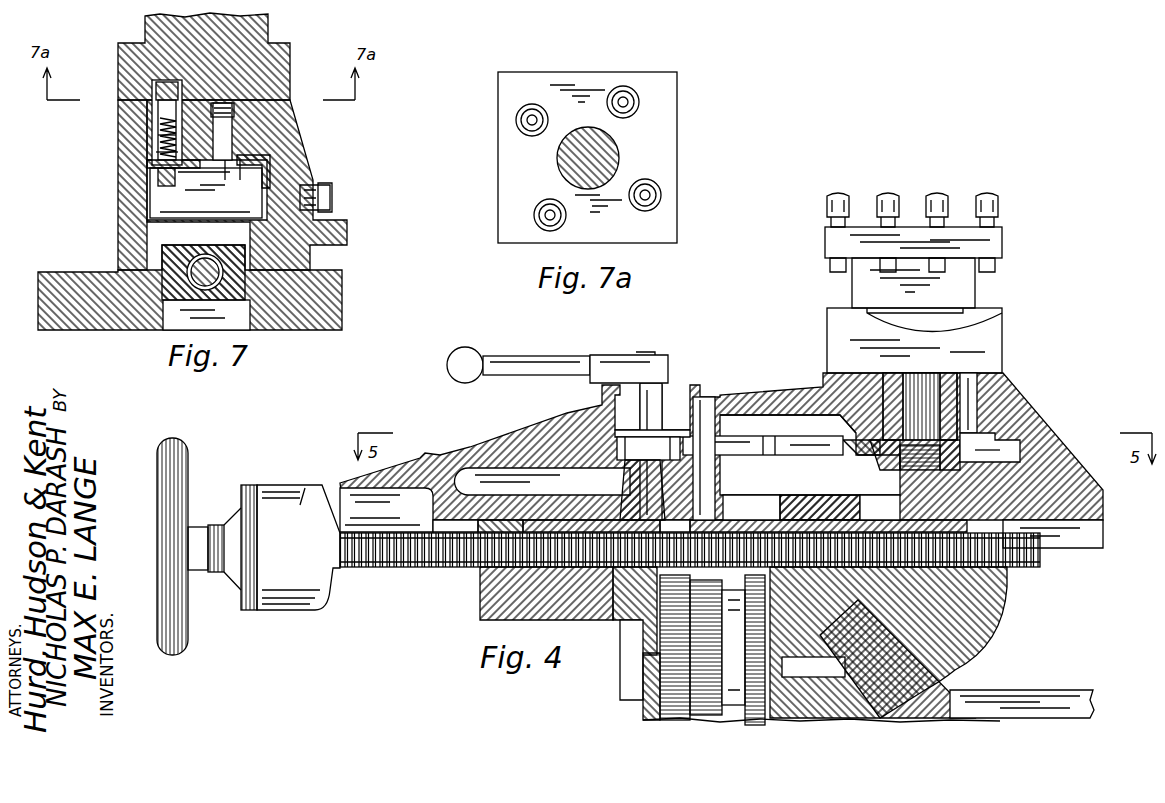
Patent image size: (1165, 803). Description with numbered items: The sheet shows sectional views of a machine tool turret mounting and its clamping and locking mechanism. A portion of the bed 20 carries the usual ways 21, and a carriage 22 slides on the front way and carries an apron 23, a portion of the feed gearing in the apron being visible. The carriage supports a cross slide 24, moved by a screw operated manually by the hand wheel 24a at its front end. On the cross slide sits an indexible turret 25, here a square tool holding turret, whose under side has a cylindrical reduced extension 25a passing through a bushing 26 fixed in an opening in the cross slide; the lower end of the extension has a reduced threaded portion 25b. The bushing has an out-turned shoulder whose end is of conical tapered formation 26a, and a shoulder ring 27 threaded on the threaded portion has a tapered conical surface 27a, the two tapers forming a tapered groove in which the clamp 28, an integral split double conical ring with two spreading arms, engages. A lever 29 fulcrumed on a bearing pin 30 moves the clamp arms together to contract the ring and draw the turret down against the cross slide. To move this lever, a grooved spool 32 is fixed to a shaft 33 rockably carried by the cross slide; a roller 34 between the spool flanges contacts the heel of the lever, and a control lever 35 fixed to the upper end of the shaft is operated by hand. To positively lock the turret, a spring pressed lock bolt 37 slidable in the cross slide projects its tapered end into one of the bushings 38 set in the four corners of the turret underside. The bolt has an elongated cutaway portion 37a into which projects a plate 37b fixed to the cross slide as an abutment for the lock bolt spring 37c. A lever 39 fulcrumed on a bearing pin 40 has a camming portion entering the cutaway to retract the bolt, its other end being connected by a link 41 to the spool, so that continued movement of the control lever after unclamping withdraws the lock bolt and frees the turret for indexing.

In FIG. 4, the bed 20 is at (1030, 692).
In FIG. 4, the ways 21 is at (968, 662).
In FIG. 7, the carriage 22 is at (72, 284).
In FIG. 4, the carriage 22 is at (995, 600).
In FIG. 4, the apron 23 is at (640, 704).
In FIG. 7, the cross slide 24 is at (130, 232).
In FIG. 4, the cross slide 24 is at (500, 440).
In FIG. 4, the hand wheel 24a is at (185, 620).
In FIG. 7, the indexible turret 25 is at (286, 64).
In FIG. 7A, the indexible turret 25 is at (665, 140).
In FIG. 4, the indexible turret 25 is at (970, 288).
In FIG. 4, the cylindrical reduced extension 25a is at (920, 406).
In FIG. 4, the reduced threaded portion 25b is at (912, 470).
In FIG. 4, the bushing 26 is at (890, 404).
In FIG. 4, the conical tapered formation 26a is at (921, 406).
In FIG. 4, the shoulder ring 27 is at (884, 466).
In FIG. 4, the tapered conical surface 27a is at (872, 458).
In FIG. 4, the clamp 28 is at (858, 440).
In FIG. 4, the lever 29 is at (745, 444).
In FIG. 4, the bearing pin 30 is at (706, 398).
In FIG. 4, the grooved spool 32 is at (616, 452).
In FIG. 4, the shaft 33 is at (656, 400).
In FIG. 4, the roller 34 is at (640, 462).
In FIG. 4, the control lever 35 is at (548, 358).
In FIG. 7, the lock bolt 37 is at (152, 118).
In FIG. 7, the elongated cutaway portion 37a is at (152, 153).
In FIG. 7, the plate 37b is at (152, 175).
In FIG. 7, the lock bolt spring 37c is at (152, 136).
In FIG. 7, the bushings 38 is at (156, 90).
In FIG. 7A, the bushings 38 is at (516, 120).
In FIG. 7, the lever 39 is at (200, 180).
In FIG. 4, the lever 39 is at (992, 462).
In FIG. 7, the bearing pin 40 is at (226, 138).
In FIG. 7, the link 41 is at (275, 172).
In FIG. 4, the link 41 is at (620, 432).